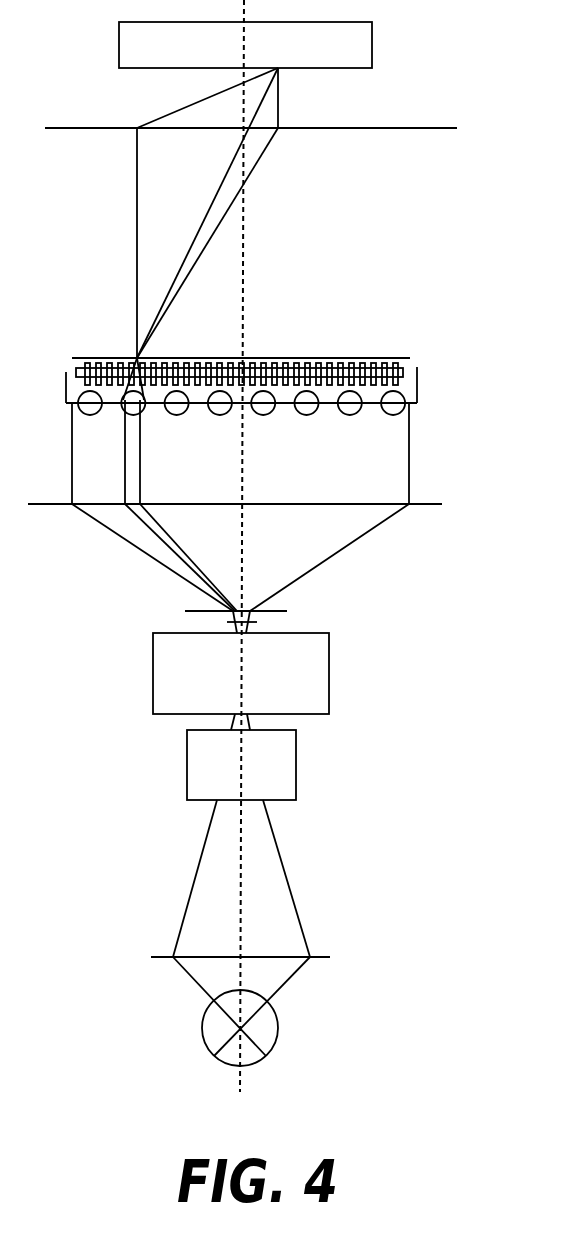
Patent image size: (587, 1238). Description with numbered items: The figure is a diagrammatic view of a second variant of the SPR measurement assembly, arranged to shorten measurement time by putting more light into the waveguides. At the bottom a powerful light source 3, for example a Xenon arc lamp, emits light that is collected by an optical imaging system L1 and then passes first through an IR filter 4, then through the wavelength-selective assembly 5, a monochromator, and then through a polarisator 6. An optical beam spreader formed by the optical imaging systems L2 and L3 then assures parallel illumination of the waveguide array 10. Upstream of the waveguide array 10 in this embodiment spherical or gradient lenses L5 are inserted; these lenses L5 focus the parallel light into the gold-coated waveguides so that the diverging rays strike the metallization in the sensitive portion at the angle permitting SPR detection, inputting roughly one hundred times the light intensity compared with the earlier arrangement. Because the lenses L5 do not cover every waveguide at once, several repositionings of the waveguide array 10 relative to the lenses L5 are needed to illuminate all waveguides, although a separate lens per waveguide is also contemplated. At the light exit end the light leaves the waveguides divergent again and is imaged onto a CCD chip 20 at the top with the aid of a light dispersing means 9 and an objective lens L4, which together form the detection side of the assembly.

The CCD chip 20 is at (362, 48).
The objective lens L4 is at (437, 128).
The light dispersing means 9 is at (395, 358).
The waveguide array 10 is at (403, 372).
The lenses L5 is at (395, 405).
The optical imaging system L3 is at (432, 504).
The polarisator 6 is at (223, 622).
The optical imaging system L2 is at (277, 610).
The wavelength-selective assembly 5 is at (320, 690).
The IR filter 4 is at (290, 786).
The optical imaging system L1 is at (320, 957).
The light source 3 is at (268, 1034).